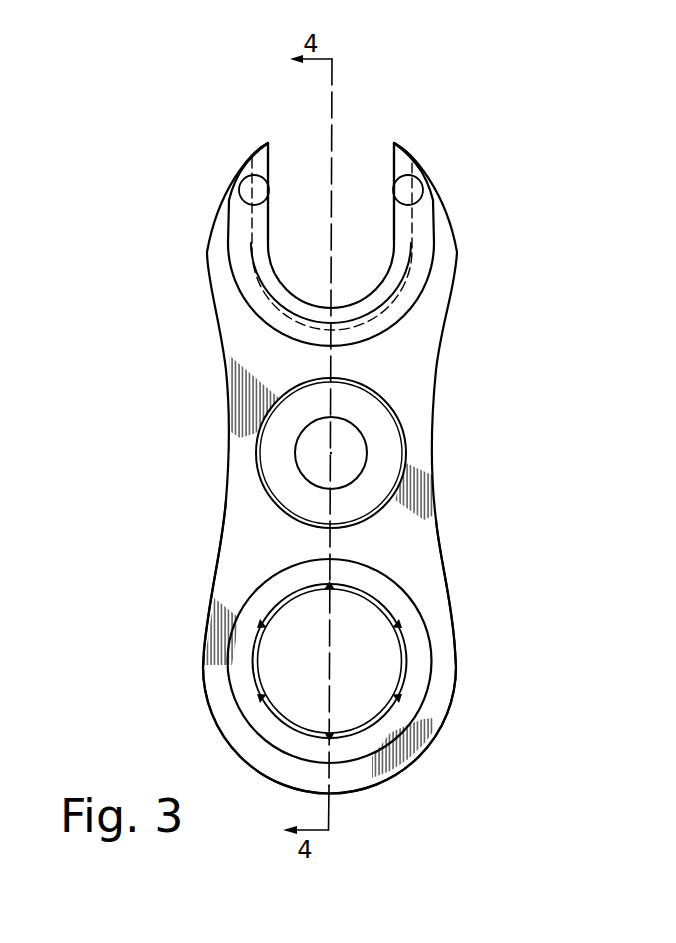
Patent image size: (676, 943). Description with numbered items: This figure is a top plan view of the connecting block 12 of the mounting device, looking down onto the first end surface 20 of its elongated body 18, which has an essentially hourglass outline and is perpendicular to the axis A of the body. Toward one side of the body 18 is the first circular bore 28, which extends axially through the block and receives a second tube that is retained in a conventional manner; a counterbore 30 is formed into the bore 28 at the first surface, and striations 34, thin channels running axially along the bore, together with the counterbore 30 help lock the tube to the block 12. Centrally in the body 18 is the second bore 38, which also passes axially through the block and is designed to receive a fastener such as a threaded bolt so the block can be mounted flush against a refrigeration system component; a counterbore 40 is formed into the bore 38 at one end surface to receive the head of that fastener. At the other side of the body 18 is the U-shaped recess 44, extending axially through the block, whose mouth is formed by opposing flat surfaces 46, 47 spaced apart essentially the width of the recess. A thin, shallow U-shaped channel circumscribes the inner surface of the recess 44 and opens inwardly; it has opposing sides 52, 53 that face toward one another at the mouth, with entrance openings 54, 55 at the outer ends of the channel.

The connecting block 12 is at (538, 283).
The body 18 is at (410, 555).
The first end surface 20 is at (402, 360).
The first circular bore 28 is at (377, 690).
The counterbore 30 is at (413, 653).
The striations 34 is at (327, 590).
The second bore 38 is at (348, 468).
The counterbore 40 is at (377, 428).
The U-shaped recess 44 is at (362, 133).
The flat surface 46 is at (270, 157).
The flat surface 47 is at (394, 157).
The channel side 52 is at (256, 176).
The channel side 53 is at (401, 193).
The entrance opening 54 is at (266, 146).
The second prong tip 55 is at (396, 142).
The axis A is at (330, 456).